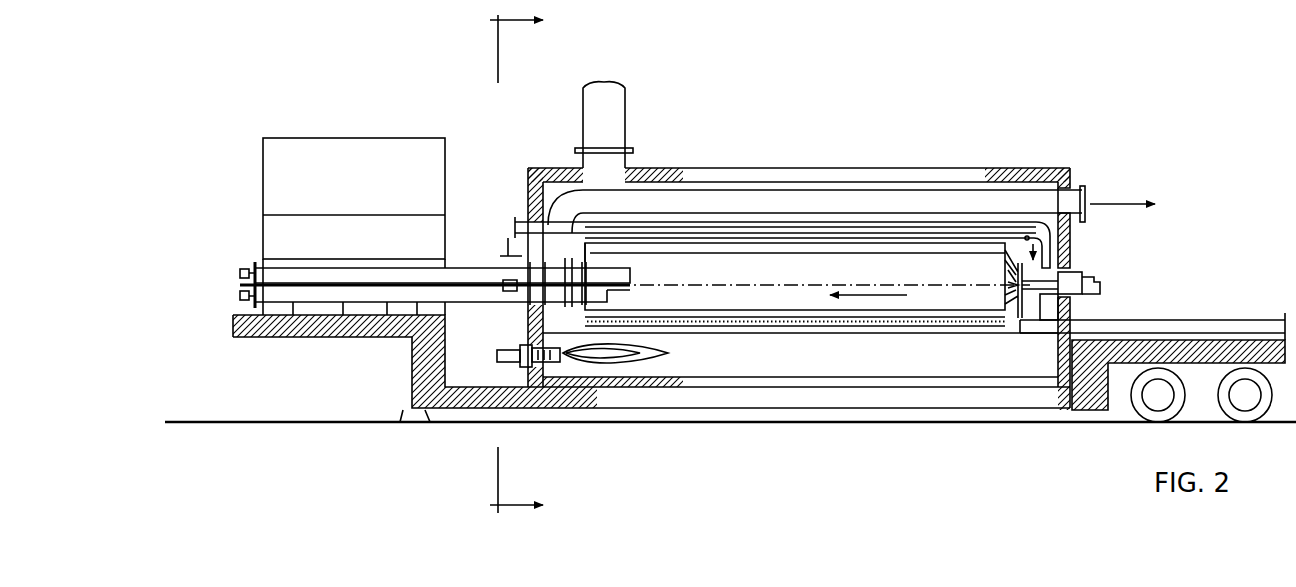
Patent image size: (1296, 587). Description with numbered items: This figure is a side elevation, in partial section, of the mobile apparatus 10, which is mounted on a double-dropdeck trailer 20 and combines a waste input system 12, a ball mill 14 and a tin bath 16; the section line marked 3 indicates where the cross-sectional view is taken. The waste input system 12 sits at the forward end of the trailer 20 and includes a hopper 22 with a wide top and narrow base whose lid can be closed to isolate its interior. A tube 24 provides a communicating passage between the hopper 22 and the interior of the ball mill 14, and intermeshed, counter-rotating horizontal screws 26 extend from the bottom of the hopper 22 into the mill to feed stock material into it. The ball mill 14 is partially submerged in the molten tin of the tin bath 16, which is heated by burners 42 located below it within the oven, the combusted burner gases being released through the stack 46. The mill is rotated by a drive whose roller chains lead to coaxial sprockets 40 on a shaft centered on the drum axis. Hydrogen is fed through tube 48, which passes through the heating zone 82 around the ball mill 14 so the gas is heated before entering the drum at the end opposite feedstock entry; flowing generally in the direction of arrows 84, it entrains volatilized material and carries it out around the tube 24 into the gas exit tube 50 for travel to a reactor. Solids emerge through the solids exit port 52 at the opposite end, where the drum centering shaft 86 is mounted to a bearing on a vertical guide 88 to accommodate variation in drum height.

The mobile apparatus 10 is at (1156, 157).
The waste input system 12 is at (300, 174).
The ball mill 14 is at (756, 282).
The tin bath 16 is at (792, 333).
The double-dropdeck trailer 20 is at (716, 396).
The hopper 22 is at (290, 193).
The tube 24 is at (478, 266).
The screws 26 is at (592, 252).
The coaxial sprockets 40 is at (524, 333).
The burners 42 is at (507, 359).
The stack 46 is at (622, 103).
The tube 48 is at (797, 225).
The tube 50 is at (1073, 185).
The solids exit port 52 is at (1018, 283).
The heating zone 82 is at (862, 190).
The arrows 84 is at (505, 219).
The drum centering shaft 86 is at (1100, 291).
The vertical guide 88 is at (1085, 271).
The section line 3- 3 is at (527, 264).